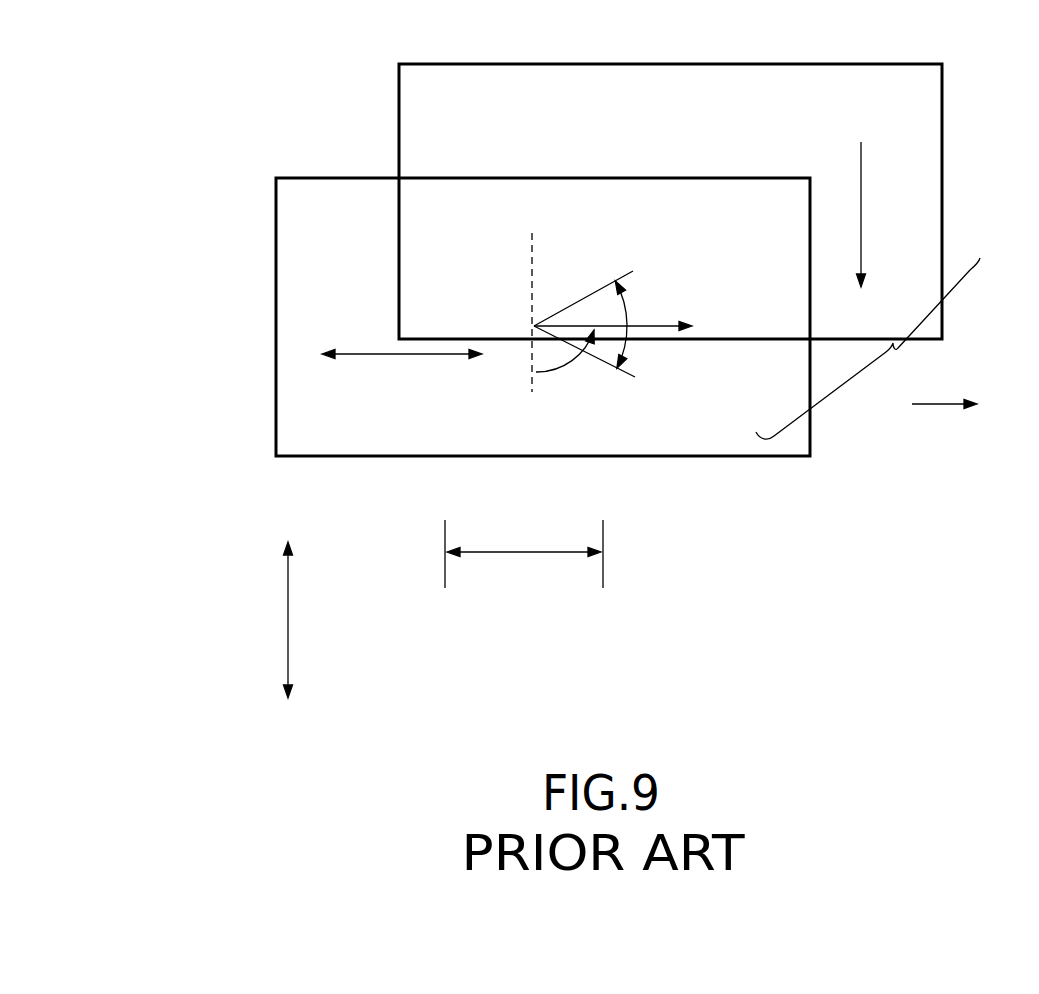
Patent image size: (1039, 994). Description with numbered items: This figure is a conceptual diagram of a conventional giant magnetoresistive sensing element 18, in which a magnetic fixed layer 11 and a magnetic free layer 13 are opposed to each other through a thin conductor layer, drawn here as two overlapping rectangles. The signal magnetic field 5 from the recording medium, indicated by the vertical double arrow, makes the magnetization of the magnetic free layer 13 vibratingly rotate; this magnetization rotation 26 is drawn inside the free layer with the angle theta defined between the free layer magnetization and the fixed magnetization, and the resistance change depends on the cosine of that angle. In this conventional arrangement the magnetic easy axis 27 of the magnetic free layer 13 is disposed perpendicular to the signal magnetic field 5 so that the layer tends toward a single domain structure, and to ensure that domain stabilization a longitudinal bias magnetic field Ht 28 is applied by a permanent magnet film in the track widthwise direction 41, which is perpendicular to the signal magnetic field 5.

The signal magnetic field 5 is at (288, 610).
The magnetic fixed layer 11 is at (420, 129).
The magnetic free layer 13 is at (288, 325).
The giant magnetoresistive sensing element 18 is at (900, 367).
The magnetization rotation 26 is at (588, 292).
The magnetic easy axis 27 is at (400, 357).
The longitudinal bias magnetic field Ht 28 is at (940, 405).
The track widthwise direction 41 is at (518, 552).